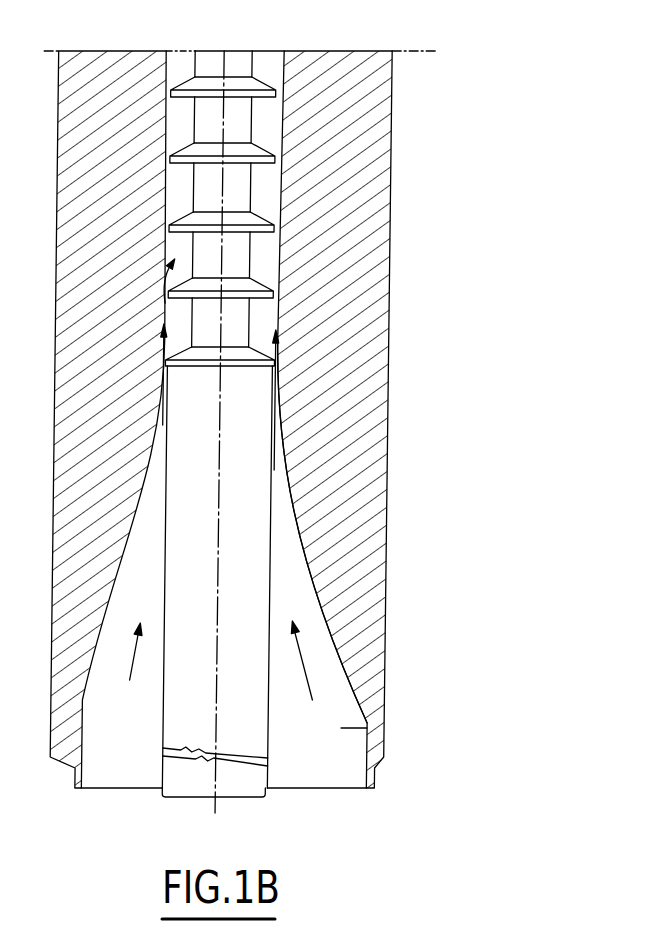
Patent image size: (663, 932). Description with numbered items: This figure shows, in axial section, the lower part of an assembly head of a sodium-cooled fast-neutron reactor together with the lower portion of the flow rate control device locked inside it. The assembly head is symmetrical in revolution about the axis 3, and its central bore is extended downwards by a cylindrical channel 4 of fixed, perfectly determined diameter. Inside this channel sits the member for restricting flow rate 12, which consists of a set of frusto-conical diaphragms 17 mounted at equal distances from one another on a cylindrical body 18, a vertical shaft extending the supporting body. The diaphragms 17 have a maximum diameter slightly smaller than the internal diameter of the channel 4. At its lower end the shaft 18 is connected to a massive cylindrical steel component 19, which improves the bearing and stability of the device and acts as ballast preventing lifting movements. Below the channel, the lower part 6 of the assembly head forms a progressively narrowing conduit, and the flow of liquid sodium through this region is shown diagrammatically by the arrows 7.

The axis 3 is at (226, 63).
The diaphragms 17 is at (272, 153).
The member for restricting flow rate 12 is at (252, 261).
The cylindrical body 18 is at (221, 322).
The cylindrical channel 4 is at (262, 328).
The massive cylindrical steel component 19 is at (217, 572).
The lower part of the assembly head 6 is at (309, 566).
The arrows 7 is at (308, 662).